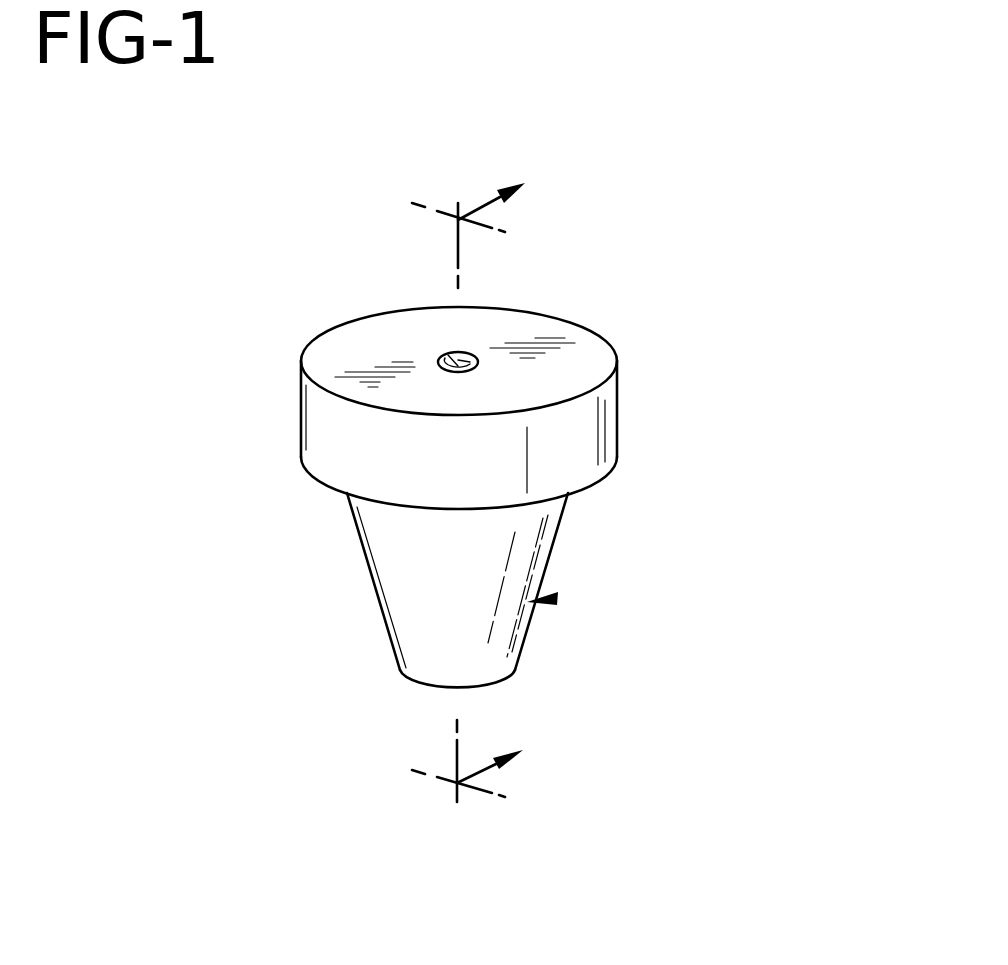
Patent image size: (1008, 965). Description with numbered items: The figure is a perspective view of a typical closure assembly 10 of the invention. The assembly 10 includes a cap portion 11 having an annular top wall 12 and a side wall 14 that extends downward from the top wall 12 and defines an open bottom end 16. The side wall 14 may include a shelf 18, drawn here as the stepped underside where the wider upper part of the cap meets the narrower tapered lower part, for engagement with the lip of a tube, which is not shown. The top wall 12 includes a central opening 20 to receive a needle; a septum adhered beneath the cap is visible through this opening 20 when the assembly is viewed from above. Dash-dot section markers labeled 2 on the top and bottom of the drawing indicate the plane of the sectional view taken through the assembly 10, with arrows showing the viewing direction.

The section line 2- 2 is at (468, 500).
The assembly 10 is at (806, 392).
The cap portion 11 is at (556, 599).
The annular top wall 12 is at (607, 343).
The side wall 14 is at (375, 590).
The open bottom end 16 is at (433, 688).
The shelf 18 is at (306, 470).
The opening 20 is at (441, 353).